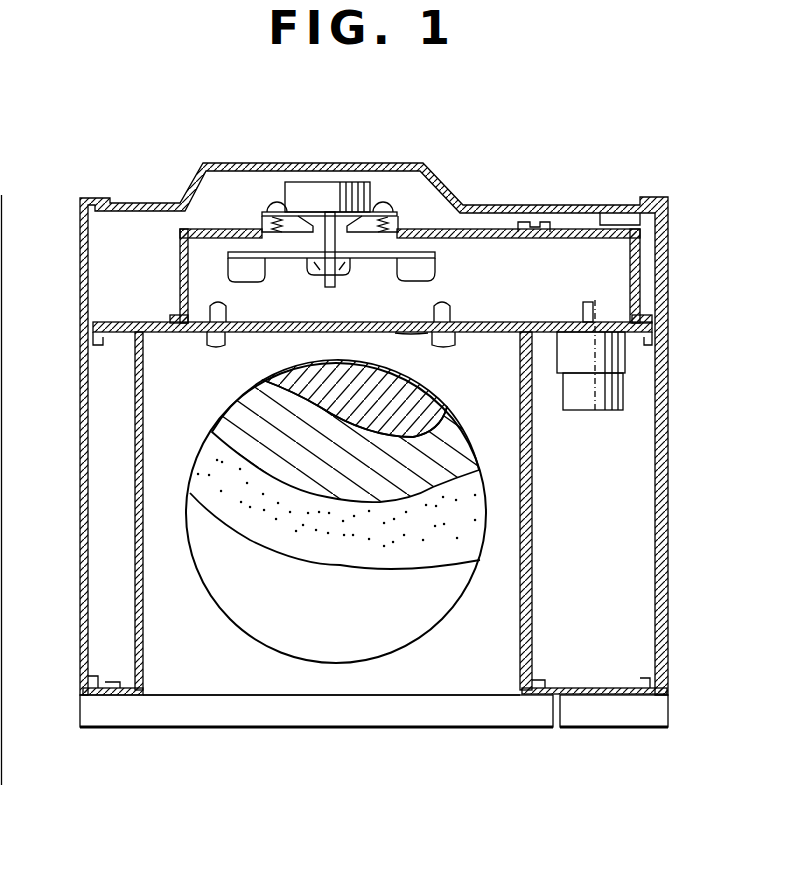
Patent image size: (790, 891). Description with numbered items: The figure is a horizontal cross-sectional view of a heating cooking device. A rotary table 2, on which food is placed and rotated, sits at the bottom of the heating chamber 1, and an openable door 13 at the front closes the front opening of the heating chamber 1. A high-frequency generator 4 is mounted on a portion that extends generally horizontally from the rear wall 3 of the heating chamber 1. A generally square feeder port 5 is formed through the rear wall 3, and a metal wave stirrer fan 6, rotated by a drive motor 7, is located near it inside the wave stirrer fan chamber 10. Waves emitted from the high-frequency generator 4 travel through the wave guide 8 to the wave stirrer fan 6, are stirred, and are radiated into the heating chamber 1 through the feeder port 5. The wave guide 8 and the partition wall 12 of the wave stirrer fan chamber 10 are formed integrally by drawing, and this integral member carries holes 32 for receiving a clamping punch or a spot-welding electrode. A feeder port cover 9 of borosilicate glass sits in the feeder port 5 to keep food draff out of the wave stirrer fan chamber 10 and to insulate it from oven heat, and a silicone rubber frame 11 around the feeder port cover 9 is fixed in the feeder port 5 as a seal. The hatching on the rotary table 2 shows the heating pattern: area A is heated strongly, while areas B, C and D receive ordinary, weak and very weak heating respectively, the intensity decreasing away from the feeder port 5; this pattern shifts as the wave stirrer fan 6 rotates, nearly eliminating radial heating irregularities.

The heating chamber 1 is at (473, 665).
The rotary table 2 is at (350, 575).
The rear wall 3 is at (490, 330).
The high-frequency generator 4 is at (600, 331).
The feeder port 5 is at (400, 338).
The wave stirrer fan 6 is at (425, 250).
The drive motor 7 is at (330, 182).
The wave guide 8 is at (590, 231).
The feeder port cover 9 is at (259, 335).
The wave stirrer fan chamber 10 is at (205, 272).
The frame 11 is at (215, 340).
The partition wall 12 is at (219, 228).
The openable door 13 is at (222, 719).
The holes 32 is at (537, 222).
The area of strong heating intensity A is at (438, 403).
The area of ordinary heating intensity B is at (458, 458).
The area of weak heating intensity C is at (467, 533).
The area of very weak heating intensity D is at (443, 603).